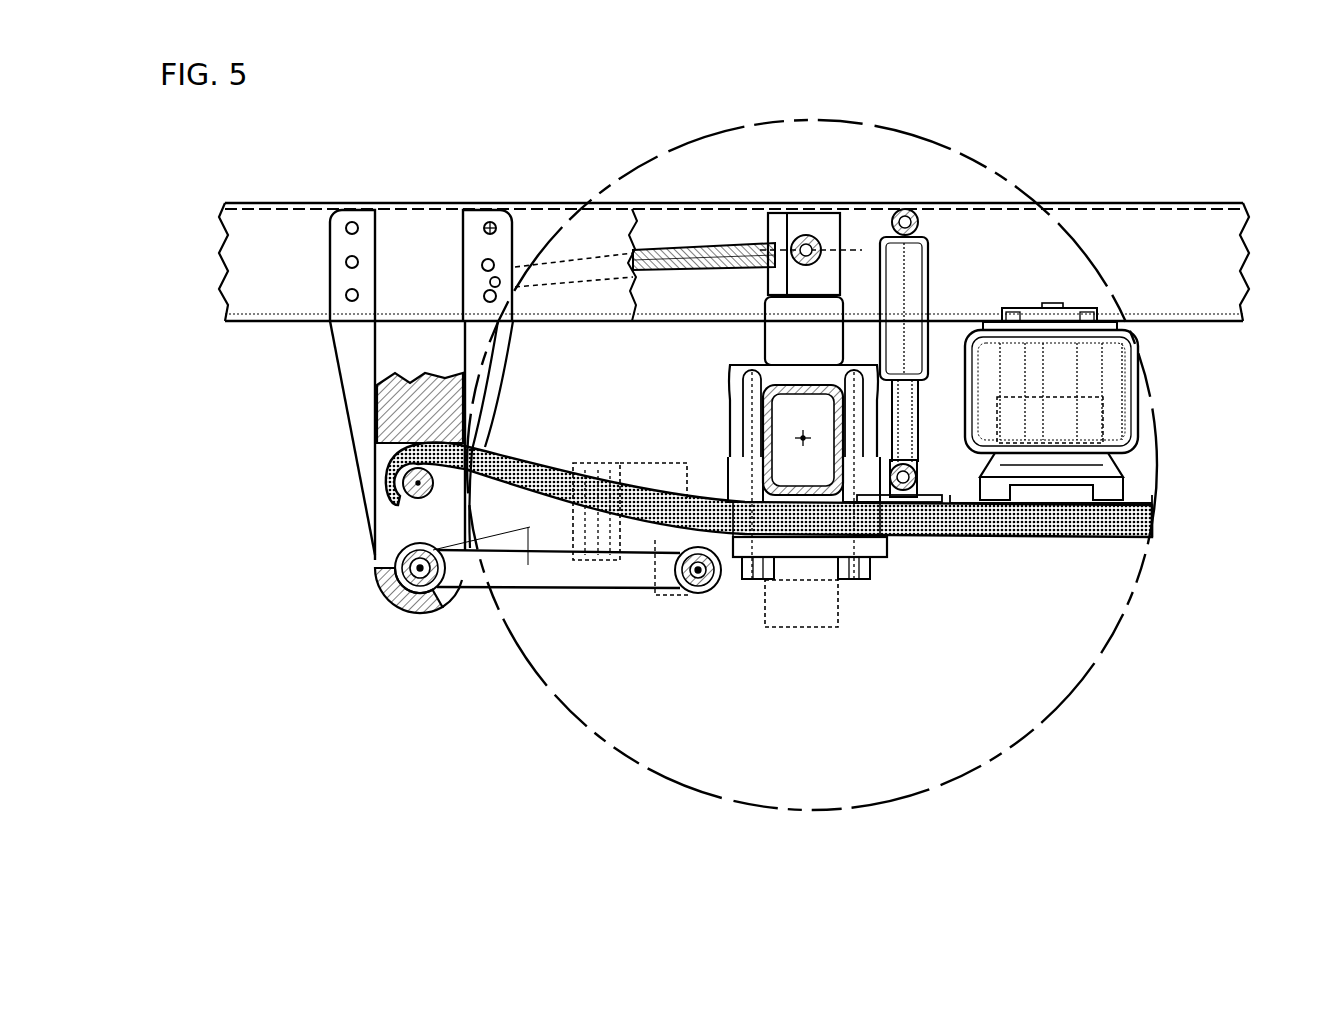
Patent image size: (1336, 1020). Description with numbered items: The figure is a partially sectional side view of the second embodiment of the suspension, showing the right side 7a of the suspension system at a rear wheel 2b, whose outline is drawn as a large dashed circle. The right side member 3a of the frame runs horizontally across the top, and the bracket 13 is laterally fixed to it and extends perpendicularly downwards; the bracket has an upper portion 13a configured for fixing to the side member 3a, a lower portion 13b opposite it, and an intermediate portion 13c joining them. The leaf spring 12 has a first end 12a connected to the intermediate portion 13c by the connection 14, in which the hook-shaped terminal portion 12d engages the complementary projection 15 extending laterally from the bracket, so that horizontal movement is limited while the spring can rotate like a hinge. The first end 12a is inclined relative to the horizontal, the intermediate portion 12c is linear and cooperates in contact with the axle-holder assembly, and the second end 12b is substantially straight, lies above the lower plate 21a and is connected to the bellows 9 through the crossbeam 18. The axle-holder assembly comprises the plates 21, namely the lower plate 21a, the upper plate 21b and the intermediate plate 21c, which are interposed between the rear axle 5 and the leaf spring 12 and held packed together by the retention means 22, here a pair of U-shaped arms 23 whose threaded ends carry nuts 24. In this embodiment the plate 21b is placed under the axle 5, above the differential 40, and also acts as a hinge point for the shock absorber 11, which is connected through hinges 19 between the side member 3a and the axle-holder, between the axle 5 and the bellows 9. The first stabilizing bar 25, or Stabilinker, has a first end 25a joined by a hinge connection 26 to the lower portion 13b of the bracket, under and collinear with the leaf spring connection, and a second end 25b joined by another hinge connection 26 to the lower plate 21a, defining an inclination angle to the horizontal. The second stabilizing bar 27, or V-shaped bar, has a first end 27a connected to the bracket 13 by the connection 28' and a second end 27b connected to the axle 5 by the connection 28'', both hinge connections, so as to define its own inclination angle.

The rear wheel 2b is at (1065, 685).
The right side member 3a is at (1200, 210).
The rear axle 5 is at (792, 557).
The right side of the suspension system 7a is at (218, 370).
The bellows 9 is at (1117, 380).
The shock absorber 11 is at (916, 265).
The leaf spring 12 is at (1048, 540).
The first end of the leaf spring 12a is at (456, 470).
The second end of the leaf spring 12b is at (1160, 523).
The intermediate portion of the leaf spring 12c is at (846, 580).
The terminal portion 12d is at (390, 470).
The bracket 13 is at (385, 208).
The upper portion of the bracket 13a is at (412, 233).
The lower portion of the bracket 13b is at (377, 600).
The intermediate portion of the bracket 13c is at (377, 413).
The connection 14 is at (420, 428).
The projection 15 is at (428, 490).
The crossbeam 18 is at (1127, 482).
The hinge 19 is at (892, 213).
The plates 21 is at (724, 455).
The lower plate 21a is at (884, 584).
The upper plate 21b is at (880, 480).
The intermediate plate 21c is at (740, 588).
The retention means 22 is at (862, 355).
The U-shaped arm 23 is at (800, 383).
The nut 24 is at (762, 595).
The first stabilizing bar 25 is at (570, 590).
The first end of the first stabilizing bar 25a is at (450, 605).
The second end of the first stabilizing bar 25b is at (662, 592).
The hinge connection 26 is at (394, 600).
The second stabilizing bar 27 is at (640, 250).
The first end of the second stabilizing bar 27a is at (520, 268).
The second end of the second stabilizing bar 27b is at (765, 245).
The connection 28' is at (475, 225).
The connection 28'' is at (824, 206).
The differential 40 is at (820, 628).